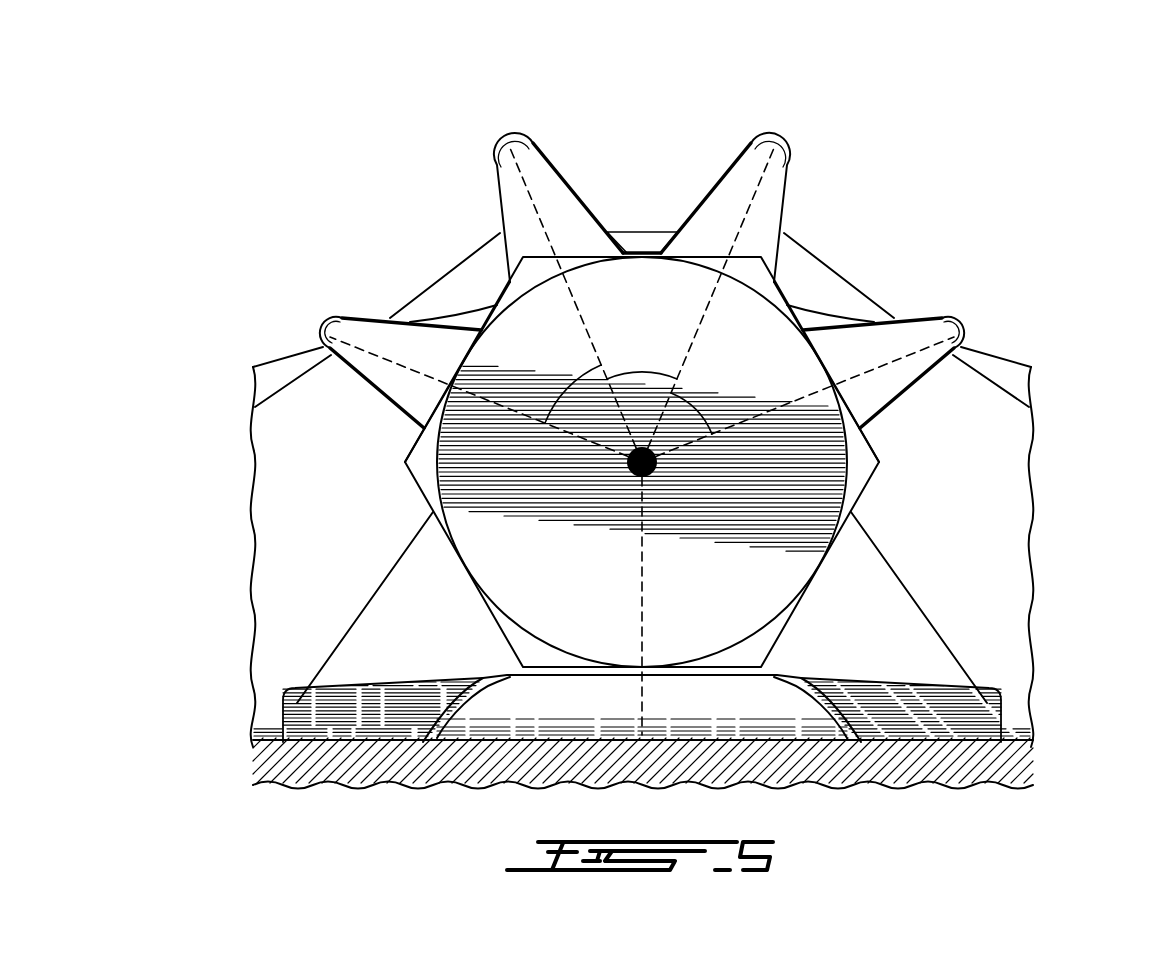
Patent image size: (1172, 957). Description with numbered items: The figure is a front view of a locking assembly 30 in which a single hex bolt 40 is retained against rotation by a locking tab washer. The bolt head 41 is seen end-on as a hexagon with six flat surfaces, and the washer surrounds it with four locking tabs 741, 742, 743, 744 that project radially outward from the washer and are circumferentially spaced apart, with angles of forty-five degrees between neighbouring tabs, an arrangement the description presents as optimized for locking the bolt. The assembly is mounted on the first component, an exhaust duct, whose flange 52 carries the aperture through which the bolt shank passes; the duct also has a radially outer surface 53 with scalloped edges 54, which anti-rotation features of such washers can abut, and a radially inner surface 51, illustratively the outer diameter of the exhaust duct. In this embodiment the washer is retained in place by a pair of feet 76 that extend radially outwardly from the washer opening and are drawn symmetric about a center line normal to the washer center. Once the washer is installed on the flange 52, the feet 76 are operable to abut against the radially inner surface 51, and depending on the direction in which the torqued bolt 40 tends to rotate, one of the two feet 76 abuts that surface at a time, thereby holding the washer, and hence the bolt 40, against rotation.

The fastening assembly 30 is at (158, 163).
The bolt 40 is at (497, 303).
The bolt head 41 is at (825, 493).
The radially inner surface 51 is at (773, 727).
The flange 52 is at (1000, 428).
The radially outer surface 53 is at (645, 232).
The scalloped edges 54 is at (812, 258).
The first locking tab 741 is at (323, 330).
The second locking tab 742 is at (512, 140).
The third locking tab 743 is at (777, 140).
The fourth locking tab 744 is at (940, 318).
The feet 76 is at (387, 617).